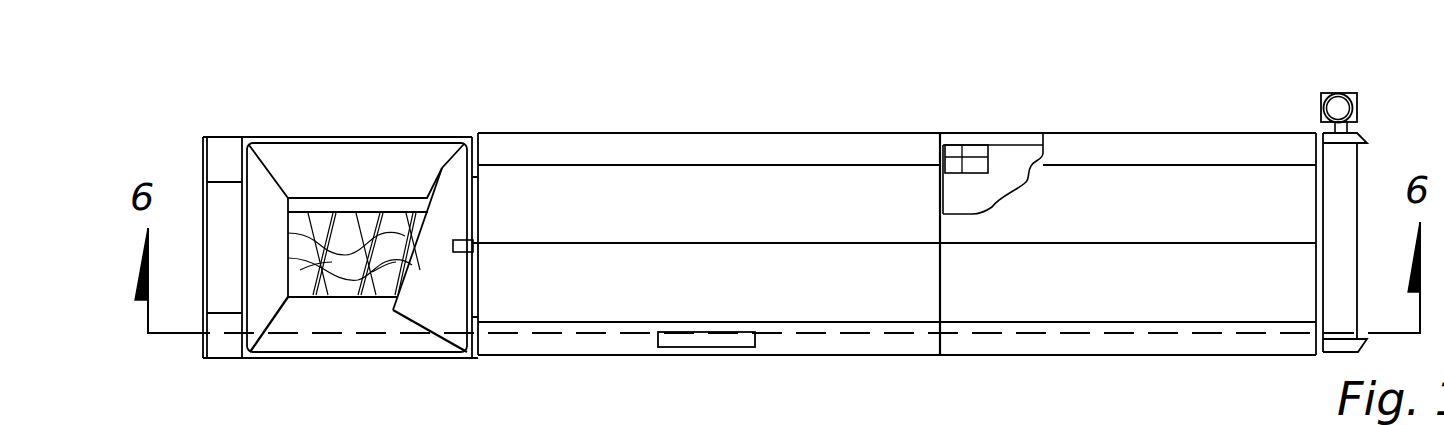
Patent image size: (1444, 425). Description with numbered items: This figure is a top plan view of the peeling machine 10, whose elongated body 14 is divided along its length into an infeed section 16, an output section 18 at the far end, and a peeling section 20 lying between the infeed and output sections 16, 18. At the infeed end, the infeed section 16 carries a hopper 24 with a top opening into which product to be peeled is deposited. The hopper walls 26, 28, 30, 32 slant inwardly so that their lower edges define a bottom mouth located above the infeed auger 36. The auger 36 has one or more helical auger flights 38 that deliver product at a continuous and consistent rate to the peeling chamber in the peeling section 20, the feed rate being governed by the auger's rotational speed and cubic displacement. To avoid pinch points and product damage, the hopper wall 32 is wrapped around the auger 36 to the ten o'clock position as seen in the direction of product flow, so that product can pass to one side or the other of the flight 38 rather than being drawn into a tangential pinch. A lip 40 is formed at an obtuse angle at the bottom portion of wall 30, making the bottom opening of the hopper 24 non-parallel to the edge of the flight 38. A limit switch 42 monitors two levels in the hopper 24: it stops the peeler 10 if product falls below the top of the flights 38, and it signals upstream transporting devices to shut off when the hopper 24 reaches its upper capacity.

The peeling machine 10 is at (736, 113).
The elongated body 14 is at (600, 133).
The infeed section 16 is at (207, 137).
The output section 18 is at (1100, 355).
The peeling section 20 is at (610, 355).
The hopper 24 is at (275, 137).
The hopper wall 26 is at (338, 318).
The hopper wall 28 is at (272, 252).
The hopper wall 30 is at (364, 160).
The hopper wall 32 is at (437, 268).
The infeed auger 36 is at (290, 300).
The helical auger flight 38 is at (400, 297).
The lip 40 is at (335, 212).
The limit switch 42 is at (473, 245).